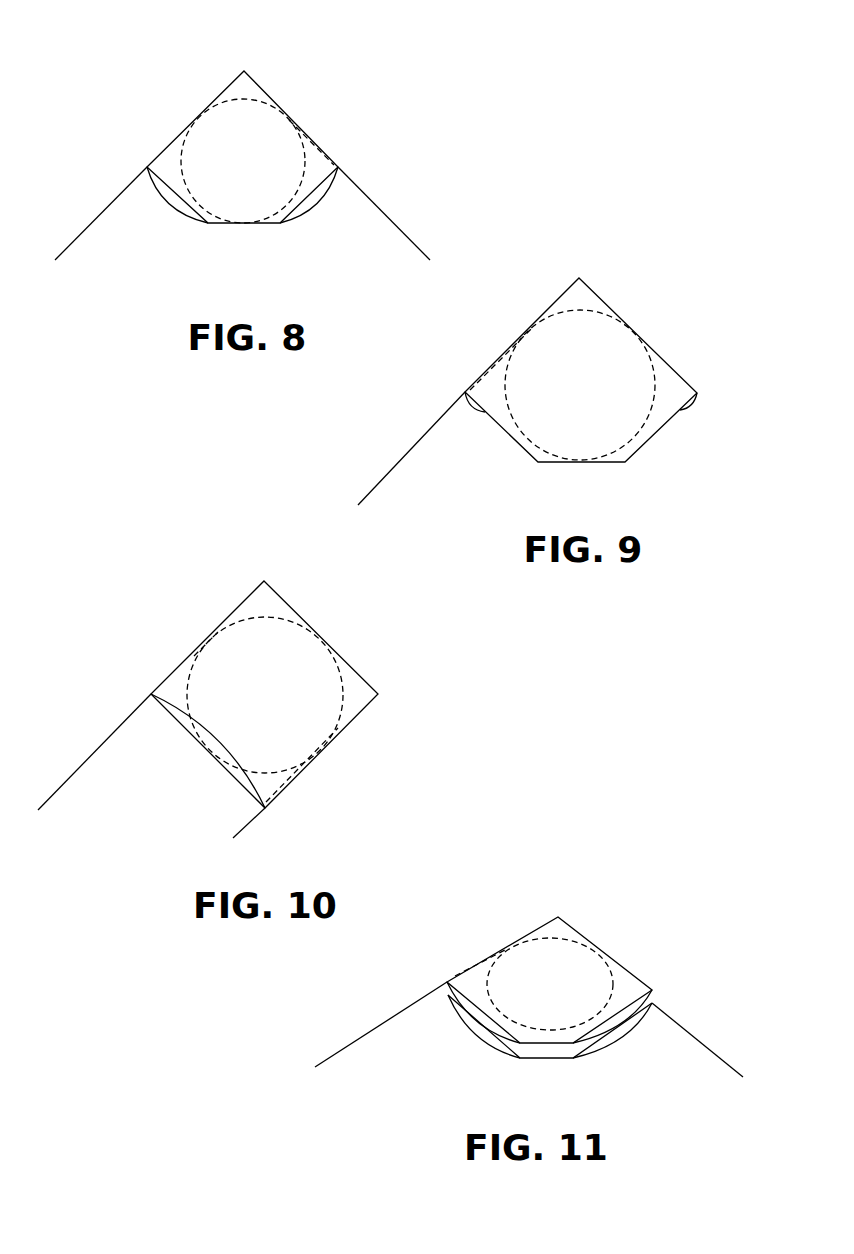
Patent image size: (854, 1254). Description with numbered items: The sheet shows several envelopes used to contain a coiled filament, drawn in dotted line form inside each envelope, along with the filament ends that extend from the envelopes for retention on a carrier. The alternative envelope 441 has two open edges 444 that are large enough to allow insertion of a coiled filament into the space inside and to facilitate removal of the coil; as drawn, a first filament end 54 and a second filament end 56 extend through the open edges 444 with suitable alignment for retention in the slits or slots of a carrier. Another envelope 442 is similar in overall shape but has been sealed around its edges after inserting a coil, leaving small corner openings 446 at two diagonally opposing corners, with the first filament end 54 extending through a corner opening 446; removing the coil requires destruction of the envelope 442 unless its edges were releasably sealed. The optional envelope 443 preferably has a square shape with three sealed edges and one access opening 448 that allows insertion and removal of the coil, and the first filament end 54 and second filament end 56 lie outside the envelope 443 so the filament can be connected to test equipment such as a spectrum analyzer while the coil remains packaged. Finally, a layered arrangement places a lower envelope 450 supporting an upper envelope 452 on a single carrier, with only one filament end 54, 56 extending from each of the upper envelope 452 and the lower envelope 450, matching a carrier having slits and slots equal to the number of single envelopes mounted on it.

In FIG. 8, the first filament end 54 is at (99, 215).
In FIG. 9, the first filament end 54 is at (417, 443).
In FIG. 10, the first filament end 54 is at (102, 747).
In FIG. 11, the first filament end 54 is at (393, 1022).
In FIG. 8, the second filament end 56 is at (384, 215).
In FIG. 10, the second filament end 56 is at (252, 820).
In FIG. 11, the second filament end 56 is at (708, 1050).
In FIG. 8, the alternative envelope 441 is at (330, 97).
In FIG. 9, the envelope 442 is at (658, 303).
In FIG. 10, the optional envelope 443 is at (350, 613).
In FIG. 8, the open edges 444 is at (305, 203).
In FIG. 9, the corner openings 446 is at (698, 396).
In FIG. 10, the access opening 448 is at (230, 775).
In FIG. 11, the lower envelope 450 is at (547, 1052).
In FIG. 11, the upper envelope 452 is at (556, 930).